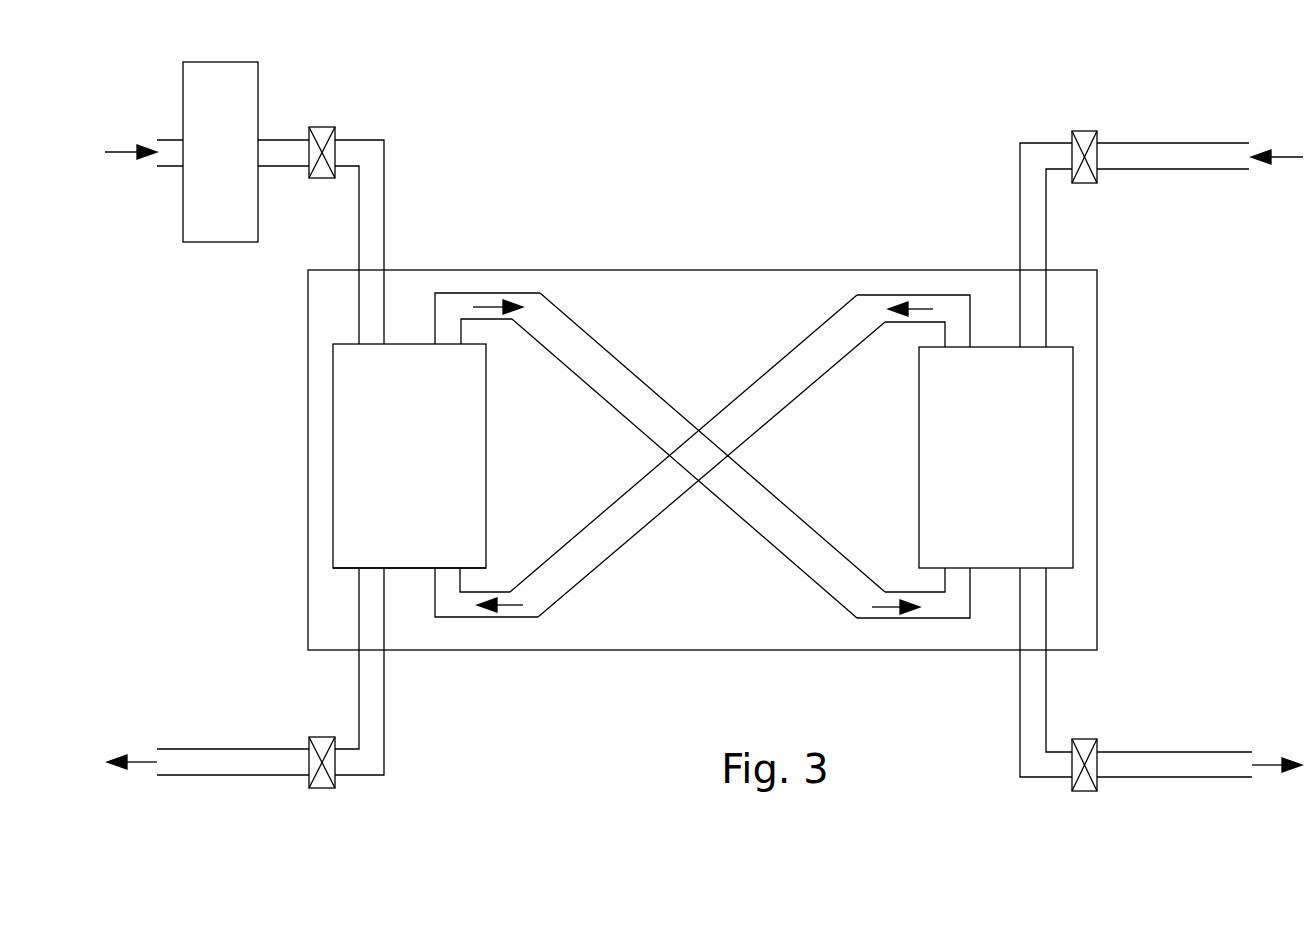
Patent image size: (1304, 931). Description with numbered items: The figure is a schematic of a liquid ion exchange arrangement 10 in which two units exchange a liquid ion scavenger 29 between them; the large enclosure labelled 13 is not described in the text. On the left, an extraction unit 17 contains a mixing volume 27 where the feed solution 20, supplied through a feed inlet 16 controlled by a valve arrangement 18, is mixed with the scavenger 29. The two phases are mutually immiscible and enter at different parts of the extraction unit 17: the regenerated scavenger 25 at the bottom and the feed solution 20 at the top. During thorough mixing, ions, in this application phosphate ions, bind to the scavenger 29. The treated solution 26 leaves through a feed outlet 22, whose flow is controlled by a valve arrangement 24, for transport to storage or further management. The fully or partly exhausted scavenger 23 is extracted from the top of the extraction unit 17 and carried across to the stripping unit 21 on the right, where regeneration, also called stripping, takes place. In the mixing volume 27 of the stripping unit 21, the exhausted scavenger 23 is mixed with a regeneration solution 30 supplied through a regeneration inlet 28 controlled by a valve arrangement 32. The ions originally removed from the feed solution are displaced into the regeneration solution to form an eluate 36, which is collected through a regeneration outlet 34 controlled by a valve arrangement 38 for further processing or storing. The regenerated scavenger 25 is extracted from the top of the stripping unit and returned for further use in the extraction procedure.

The ion exchange arrangement 10 is at (716, 165).
The heat exchanger housing 13 is at (637, 287).
The feed inlet 16 is at (359, 233).
The extraction unit 17 is at (345, 486).
The valve arrangement 18 is at (322, 127).
The feed solution 20 is at (128, 146).
The stripping unit 21 is at (1067, 460).
The feed outlet 22 is at (359, 680).
The exhausted scavenger 23 is at (508, 322).
The valve arrangement 24 is at (322, 789).
The regenerated scavenger 25 is at (893, 322).
The treated solution 26 is at (127, 770).
The mixing volume 27 is at (467, 472).
The regeneration inlet 28 is at (1047, 235).
The liquid ion scavenger 29 is at (345, 543).
The regeneration solution 30 is at (1275, 152).
The valve arrangement 32 is at (1085, 131).
The regeneration outlet 34 is at (1047, 680).
The eluate 36 is at (1278, 770).
The valve arrangement 38 is at (1083, 792).